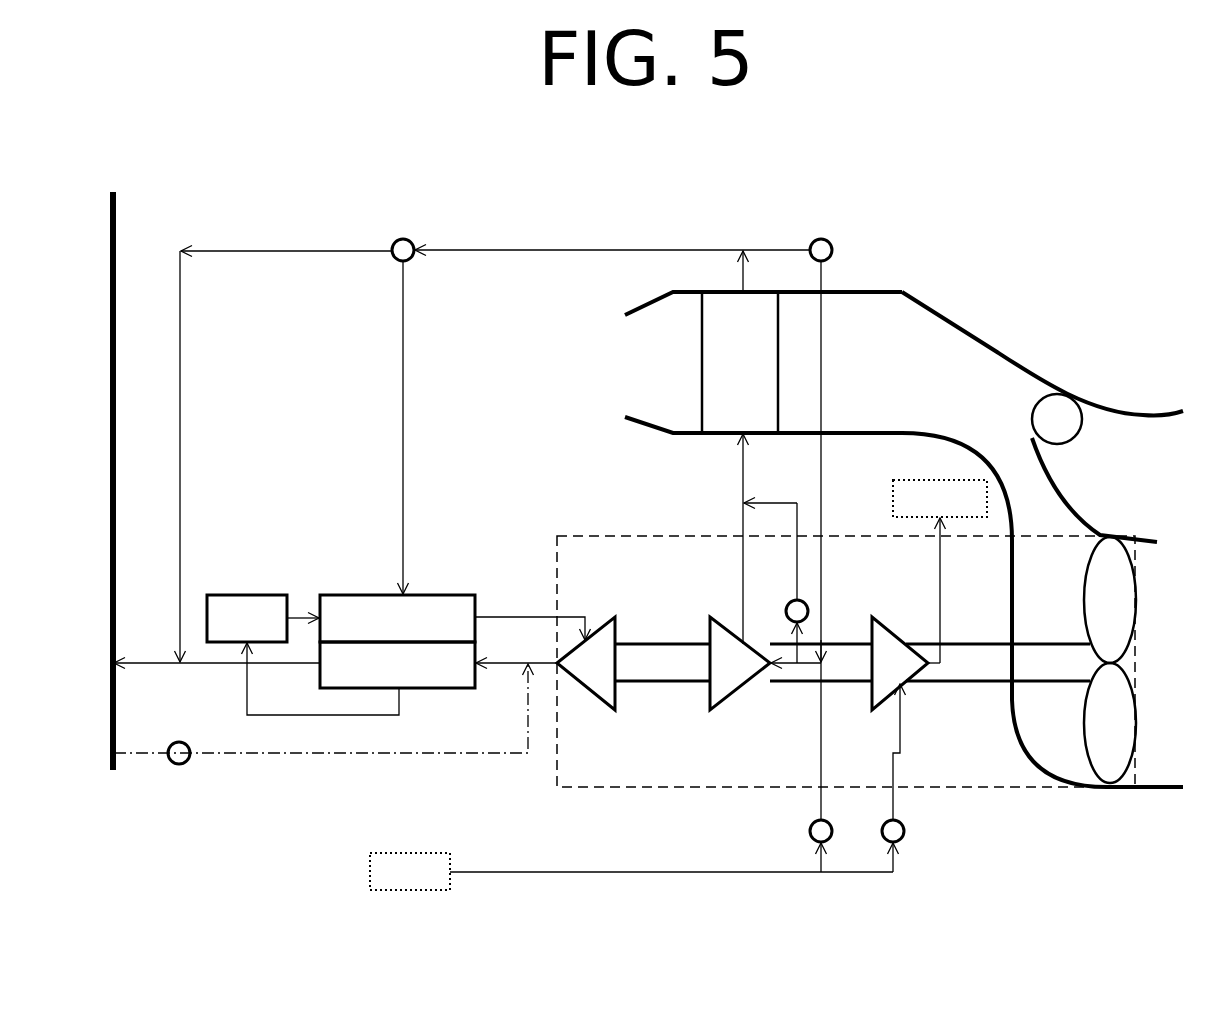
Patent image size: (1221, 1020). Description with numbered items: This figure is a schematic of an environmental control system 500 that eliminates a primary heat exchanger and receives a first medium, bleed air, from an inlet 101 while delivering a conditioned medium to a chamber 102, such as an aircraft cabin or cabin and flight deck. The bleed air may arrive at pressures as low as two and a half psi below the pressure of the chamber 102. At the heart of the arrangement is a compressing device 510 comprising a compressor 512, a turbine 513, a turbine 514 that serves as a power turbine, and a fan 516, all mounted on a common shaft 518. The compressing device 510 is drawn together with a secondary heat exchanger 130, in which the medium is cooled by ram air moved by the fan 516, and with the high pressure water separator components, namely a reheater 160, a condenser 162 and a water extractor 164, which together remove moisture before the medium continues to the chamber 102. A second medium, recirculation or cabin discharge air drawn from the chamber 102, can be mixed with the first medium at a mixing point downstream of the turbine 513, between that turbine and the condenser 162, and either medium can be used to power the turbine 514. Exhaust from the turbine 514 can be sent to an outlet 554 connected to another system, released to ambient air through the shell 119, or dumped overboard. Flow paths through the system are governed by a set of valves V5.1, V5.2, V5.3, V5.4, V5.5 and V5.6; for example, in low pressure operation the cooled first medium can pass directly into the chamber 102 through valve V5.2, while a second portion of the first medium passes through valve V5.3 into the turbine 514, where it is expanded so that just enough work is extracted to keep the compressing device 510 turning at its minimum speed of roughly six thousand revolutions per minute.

The environmental control system 500 is at (1186, 102).
The chamber 102 is at (112, 190).
The secondary heat exchanger 130 is at (721, 377).
The shell 119 is at (1055, 385).
The fan 516 is at (1065, 720).
The compressing device 510 is at (653, 788).
The outlet 554 is at (940, 571).
The inlet 101 is at (391, 884).
The water extractor 164 is at (228, 631).
The reheater 160 is at (378, 631).
The condenser 162 is at (378, 677).
The turbine 513 is at (577, 675).
The compressor 512 is at (720, 675).
The turbine 514 is at (877, 675).
The shaft 518 is at (962, 683).
The valve V5.1 is at (810, 825).
The valve V5.2 is at (393, 245).
The valve V5.3 is at (906, 838).
The valve V5.4 is at (786, 606).
The valve V5.5 is at (190, 758).
The valve V5.6 is at (812, 240).